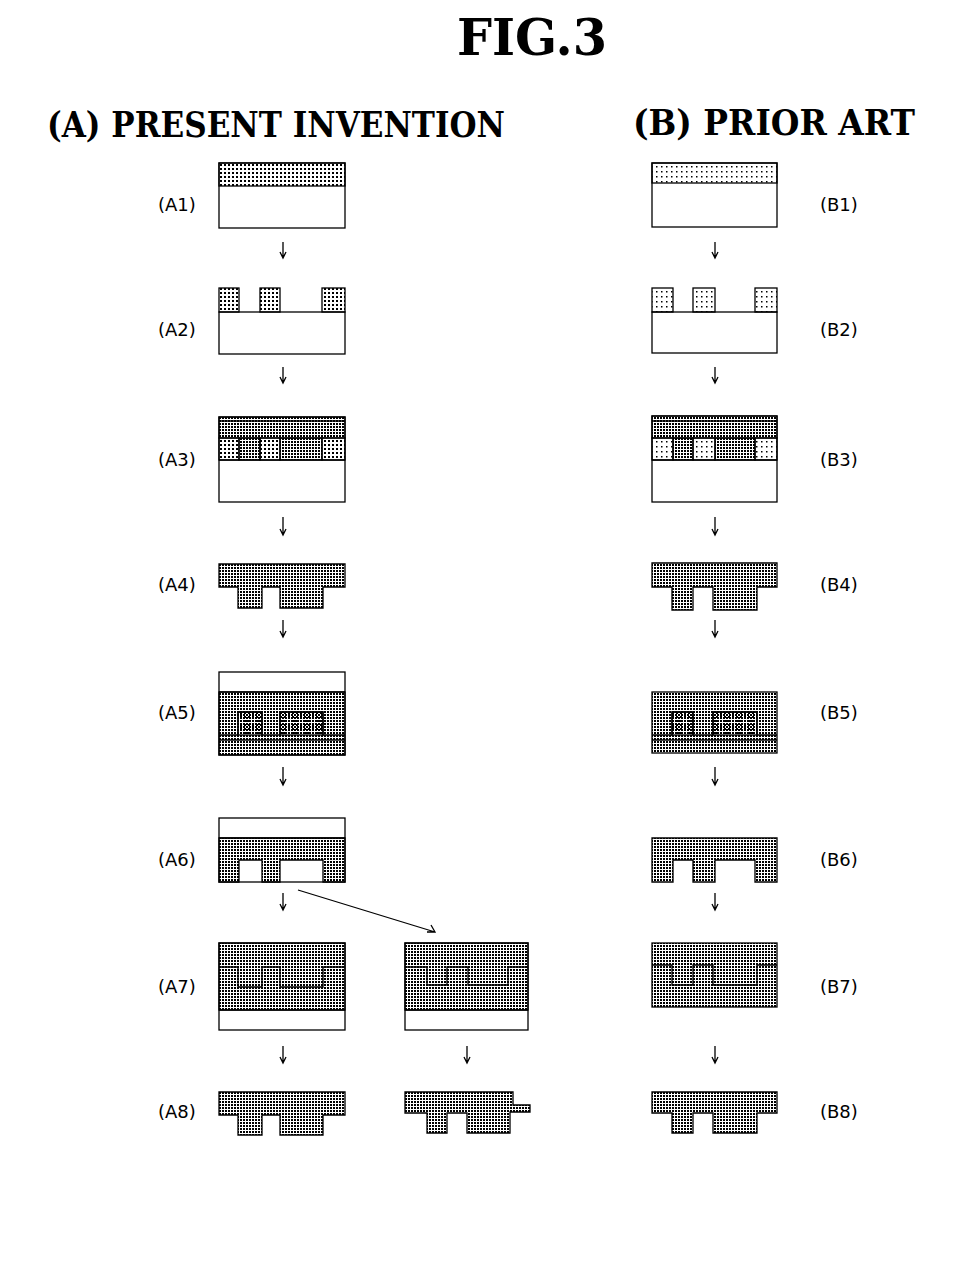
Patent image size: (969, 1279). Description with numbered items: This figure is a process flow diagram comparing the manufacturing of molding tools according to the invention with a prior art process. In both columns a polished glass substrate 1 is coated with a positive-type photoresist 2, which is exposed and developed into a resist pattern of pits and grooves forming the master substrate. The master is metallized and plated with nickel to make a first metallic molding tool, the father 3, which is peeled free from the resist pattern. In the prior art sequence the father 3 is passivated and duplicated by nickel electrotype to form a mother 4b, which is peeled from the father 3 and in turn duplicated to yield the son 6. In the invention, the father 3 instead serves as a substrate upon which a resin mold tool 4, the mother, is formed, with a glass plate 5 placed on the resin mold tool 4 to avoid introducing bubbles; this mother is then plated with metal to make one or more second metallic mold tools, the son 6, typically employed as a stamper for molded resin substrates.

The substrate 1 is at (335, 210).
The photoresist 2 is at (340, 172).
The father 3 is at (333, 428).
The resin mold tool 4 is at (340, 708).
The mother 4b is at (657, 712).
The glass plate 5 is at (333, 683).
The son 6 is at (335, 956).